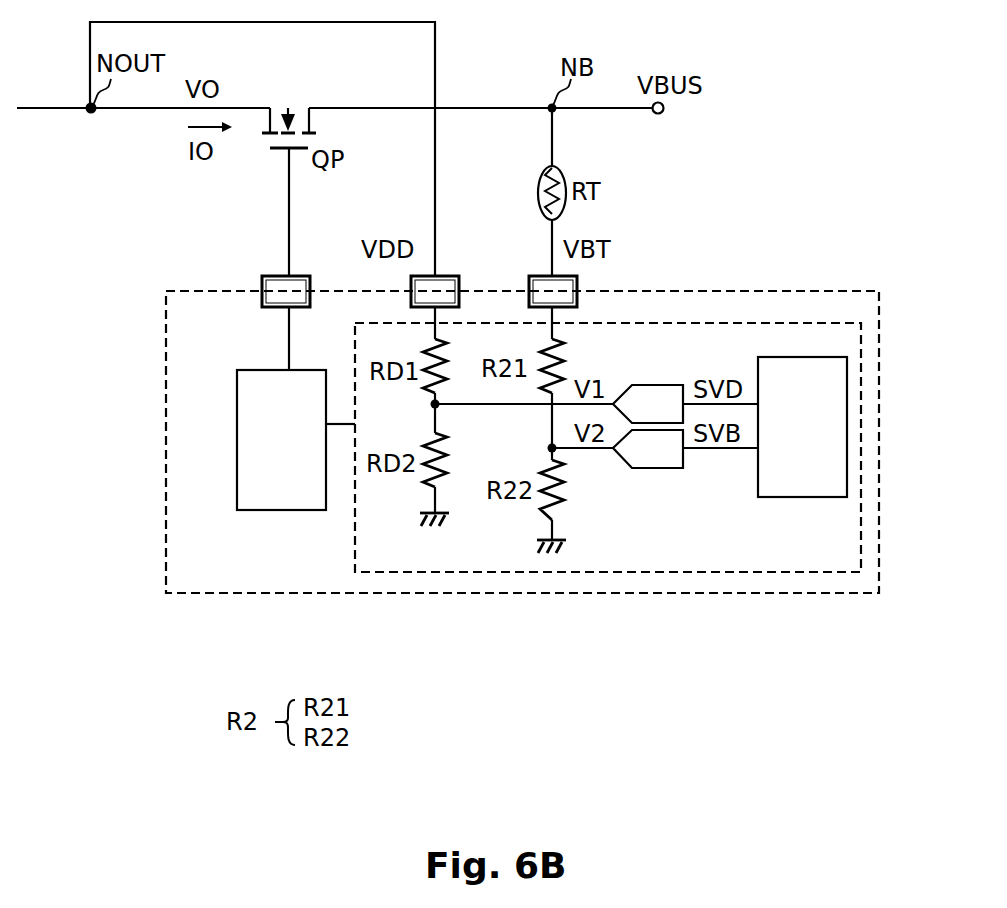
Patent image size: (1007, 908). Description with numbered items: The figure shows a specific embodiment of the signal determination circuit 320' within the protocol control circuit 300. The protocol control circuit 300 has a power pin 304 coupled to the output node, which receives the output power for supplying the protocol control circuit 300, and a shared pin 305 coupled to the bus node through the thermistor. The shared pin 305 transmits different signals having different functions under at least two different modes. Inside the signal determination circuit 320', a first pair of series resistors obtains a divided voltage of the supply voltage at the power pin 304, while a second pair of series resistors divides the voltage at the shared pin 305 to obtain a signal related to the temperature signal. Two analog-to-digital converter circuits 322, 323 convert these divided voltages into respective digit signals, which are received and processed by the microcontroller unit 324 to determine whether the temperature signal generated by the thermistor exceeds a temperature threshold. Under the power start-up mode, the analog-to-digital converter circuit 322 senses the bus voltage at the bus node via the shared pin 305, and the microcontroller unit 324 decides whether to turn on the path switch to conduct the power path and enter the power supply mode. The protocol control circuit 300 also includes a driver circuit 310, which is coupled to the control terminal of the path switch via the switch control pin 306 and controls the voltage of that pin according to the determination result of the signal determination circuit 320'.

The protocol control circuit 300 is at (522, 442).
The power pin 304 is at (435, 291).
The shared pin 305 is at (553, 291).
The switch control pin 306 is at (286, 291).
The driver circuit 310 is at (281, 440).
The signal determination circuit 320' is at (608, 447).
The analog-to-digital converter circuit 322 is at (648, 404).
The analog-to-digital converter circuit 323 is at (648, 449).
The microcontroller unit (MCU) 324 is at (802, 427).